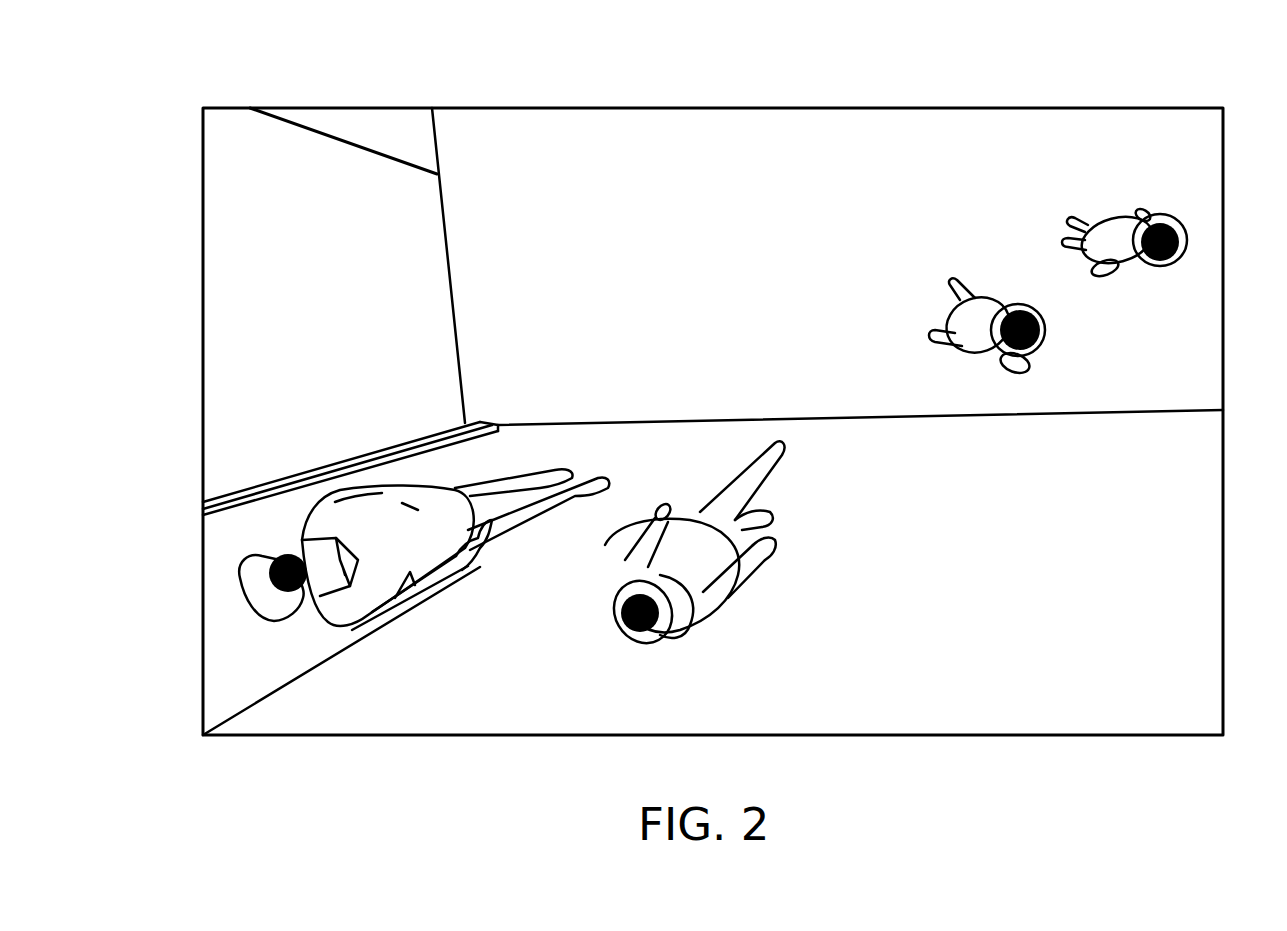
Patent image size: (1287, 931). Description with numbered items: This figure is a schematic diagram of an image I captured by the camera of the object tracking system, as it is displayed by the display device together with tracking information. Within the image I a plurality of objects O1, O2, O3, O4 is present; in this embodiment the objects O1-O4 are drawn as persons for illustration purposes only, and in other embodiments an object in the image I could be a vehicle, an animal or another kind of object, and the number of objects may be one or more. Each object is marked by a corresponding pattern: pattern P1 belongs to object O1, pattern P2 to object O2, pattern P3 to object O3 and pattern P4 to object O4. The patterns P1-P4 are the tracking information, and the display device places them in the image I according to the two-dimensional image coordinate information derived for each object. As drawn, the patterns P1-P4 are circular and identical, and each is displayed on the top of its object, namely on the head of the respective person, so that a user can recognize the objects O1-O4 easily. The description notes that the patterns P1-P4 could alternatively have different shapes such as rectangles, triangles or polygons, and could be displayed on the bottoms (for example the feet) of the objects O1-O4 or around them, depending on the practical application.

The image I is at (1150, 101).
The object O1 is at (377, 559).
The object O2 is at (673, 611).
The object O3 is at (1029, 327).
The object O4 is at (1169, 236).
The pattern P1 is at (272, 560).
The pattern P2 is at (640, 634).
The pattern P3 is at (1042, 343).
The pattern P4 is at (1178, 258).